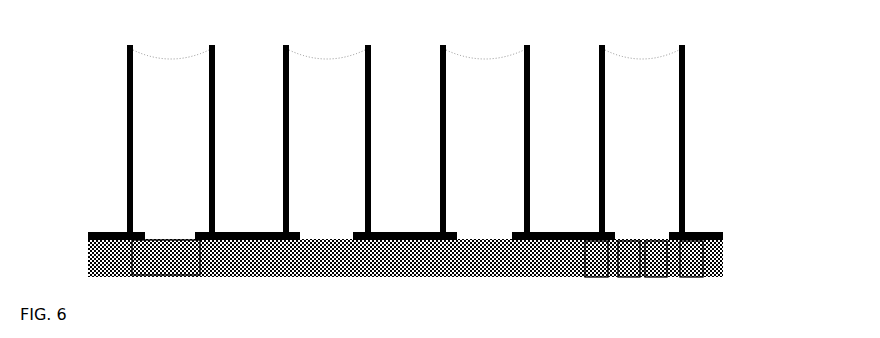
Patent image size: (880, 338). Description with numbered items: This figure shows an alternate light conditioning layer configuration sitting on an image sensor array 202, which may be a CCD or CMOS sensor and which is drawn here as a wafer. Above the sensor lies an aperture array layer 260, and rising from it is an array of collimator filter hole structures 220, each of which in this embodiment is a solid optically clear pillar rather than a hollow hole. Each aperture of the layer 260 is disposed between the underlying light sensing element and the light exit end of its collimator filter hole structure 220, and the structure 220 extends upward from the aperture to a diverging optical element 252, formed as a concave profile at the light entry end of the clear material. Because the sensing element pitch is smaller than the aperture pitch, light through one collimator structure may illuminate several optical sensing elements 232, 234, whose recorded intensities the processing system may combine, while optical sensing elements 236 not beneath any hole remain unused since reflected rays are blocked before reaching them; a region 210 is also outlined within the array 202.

The image sensor array 202 is at (236, 280).
The device region 210 is at (166, 257).
The collimator filter hole structure 220 is at (172, 142).
The optical sensing element 232 is at (592, 264).
The optical sensing element 234 is at (658, 264).
The unused optical sensing element 236 is at (692, 264).
The diverging optical element 252 is at (163, 62).
The aperture array layer 260 is at (724, 234).